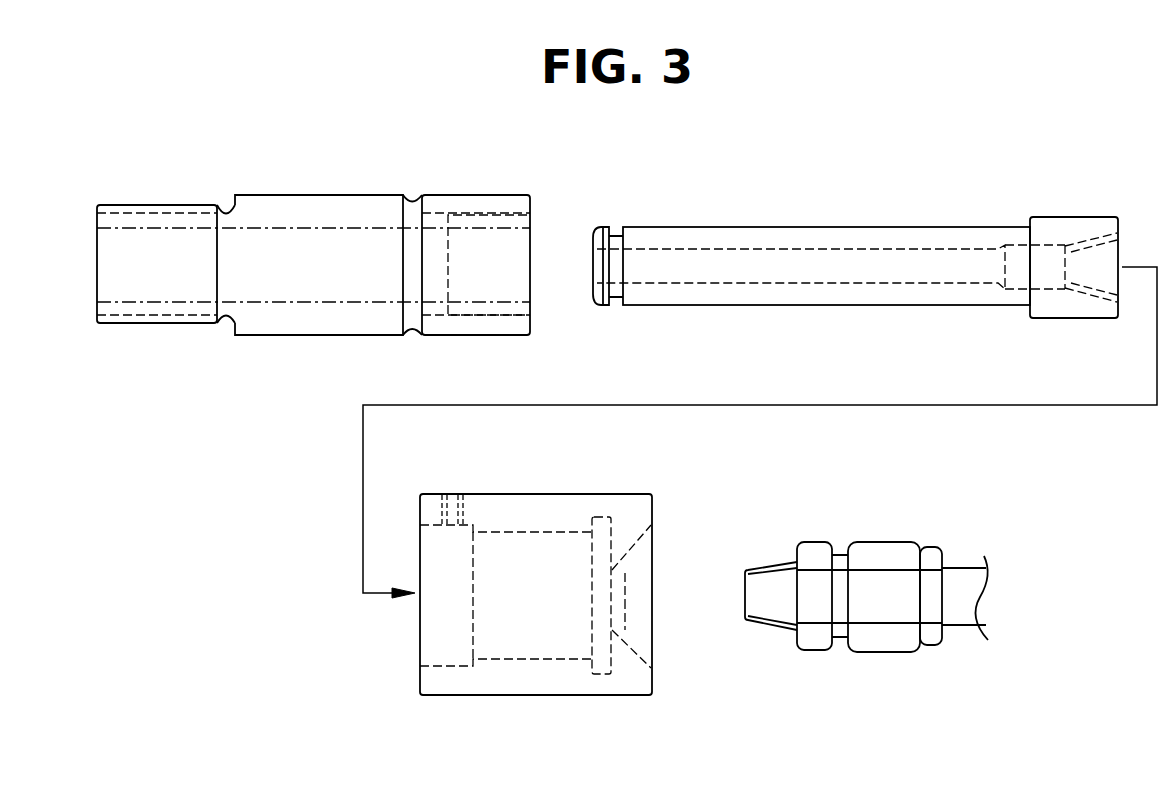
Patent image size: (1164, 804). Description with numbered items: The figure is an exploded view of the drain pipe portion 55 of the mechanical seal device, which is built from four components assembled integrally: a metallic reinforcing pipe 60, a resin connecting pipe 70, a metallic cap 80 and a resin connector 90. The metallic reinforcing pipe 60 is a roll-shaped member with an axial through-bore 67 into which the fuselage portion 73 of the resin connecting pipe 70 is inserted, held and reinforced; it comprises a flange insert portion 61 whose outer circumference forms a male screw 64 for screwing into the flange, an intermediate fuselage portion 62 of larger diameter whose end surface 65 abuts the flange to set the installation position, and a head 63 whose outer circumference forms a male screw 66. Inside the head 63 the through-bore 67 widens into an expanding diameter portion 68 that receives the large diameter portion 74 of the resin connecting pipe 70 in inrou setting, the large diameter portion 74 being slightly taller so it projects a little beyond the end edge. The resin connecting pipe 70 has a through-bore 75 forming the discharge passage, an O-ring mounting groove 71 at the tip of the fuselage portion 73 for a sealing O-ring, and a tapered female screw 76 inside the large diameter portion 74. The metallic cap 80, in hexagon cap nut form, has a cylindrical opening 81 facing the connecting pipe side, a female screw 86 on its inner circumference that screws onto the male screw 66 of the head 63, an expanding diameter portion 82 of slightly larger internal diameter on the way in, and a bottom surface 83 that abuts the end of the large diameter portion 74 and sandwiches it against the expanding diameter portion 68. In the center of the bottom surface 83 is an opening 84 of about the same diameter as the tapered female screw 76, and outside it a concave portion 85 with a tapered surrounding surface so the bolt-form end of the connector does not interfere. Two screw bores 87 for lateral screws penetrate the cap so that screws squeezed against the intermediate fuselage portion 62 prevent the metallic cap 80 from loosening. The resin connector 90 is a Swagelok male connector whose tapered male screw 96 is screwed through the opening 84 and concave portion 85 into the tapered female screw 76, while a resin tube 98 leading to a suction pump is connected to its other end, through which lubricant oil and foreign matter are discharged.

The drain pipe portion 55 is at (232, 662).
The metallic reinforcing pipe 60 is at (335, 261).
The flange insert portion 61 is at (168, 213).
The intermediate fuselage portion 62 is at (318, 212).
The head 63 is at (481, 212).
The male screw 64 is at (157, 325).
The end surface 65 is at (231, 206).
The male screw 66 is at (470, 336).
The through-bore 67 is at (298, 302).
The expanding diameter portion 68 is at (488, 316).
The resin connecting pipe 70 is at (855, 264).
The O-ring mounting groove 71 is at (616, 231).
The fuselage portion 73 is at (842, 232).
The large diameter portion 74 is at (1070, 231).
The through-bore 75 is at (908, 283).
The tapered female screw 76 is at (1108, 284).
The metallic cap 80 is at (524, 602).
The cylindrical opening 81 is at (440, 665).
The expanding diameter portion 82 is at (622, 665).
The bottom surface 83 is at (596, 517).
The opening 84 is at (628, 566).
The concave portion 85 is at (640, 643).
The female screw 86 is at (522, 525).
The screw bores 87 is at (448, 500).
The resin connector 90 is at (869, 606).
The tapered male screw 96 is at (758, 567).
The resin tube 98 is at (962, 627).